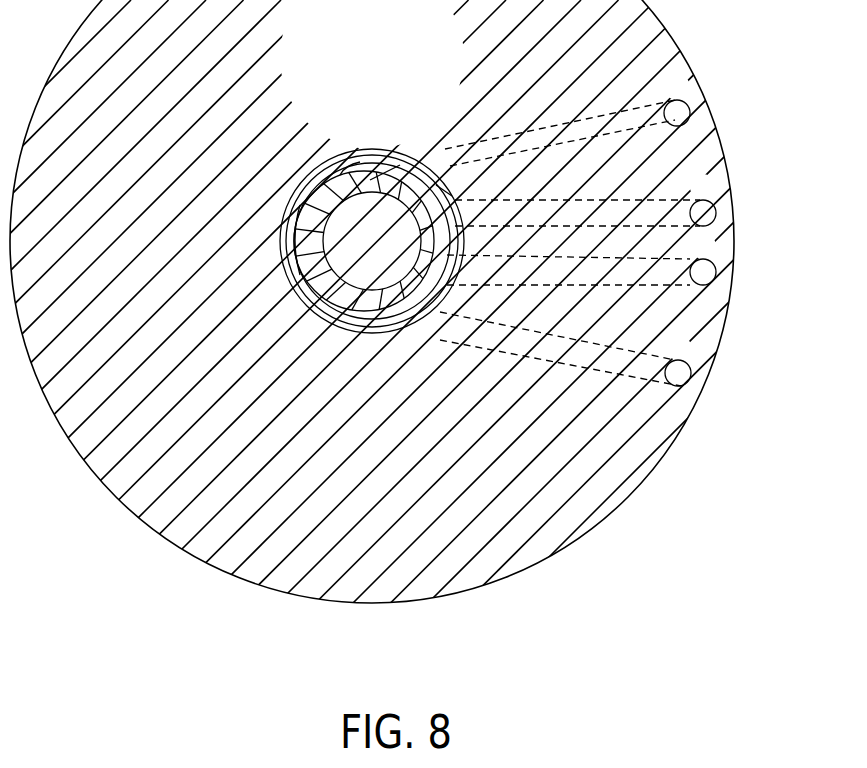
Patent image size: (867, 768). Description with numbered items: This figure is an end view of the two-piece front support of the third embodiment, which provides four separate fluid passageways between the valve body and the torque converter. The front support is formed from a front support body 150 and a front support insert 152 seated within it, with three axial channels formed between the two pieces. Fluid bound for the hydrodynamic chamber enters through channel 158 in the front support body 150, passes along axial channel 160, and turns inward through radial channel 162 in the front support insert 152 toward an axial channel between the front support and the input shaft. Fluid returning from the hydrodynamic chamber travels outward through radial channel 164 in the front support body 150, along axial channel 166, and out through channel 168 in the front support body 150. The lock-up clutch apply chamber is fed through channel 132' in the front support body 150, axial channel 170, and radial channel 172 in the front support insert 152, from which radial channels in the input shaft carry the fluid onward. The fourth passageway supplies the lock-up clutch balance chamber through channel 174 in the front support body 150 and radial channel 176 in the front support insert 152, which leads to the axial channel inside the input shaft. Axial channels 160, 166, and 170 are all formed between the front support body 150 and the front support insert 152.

The front support body 150 is at (563, 543).
The front support insert 152 is at (345, 331).
The channel 158 is at (613, 216).
The axial channel 160 is at (470, 150).
The radial channel 162 is at (424, 223).
The radial channel 164 is at (409, 337).
The axial channel 166 is at (292, 254).
The channel 168 is at (579, 350).
The axial channel 170 is at (403, 156).
The radial channel 172 is at (352, 162).
The channel 174 is at (676, 276).
The radial channel 176 is at (412, 250).
The channel 132' is at (570, 222).